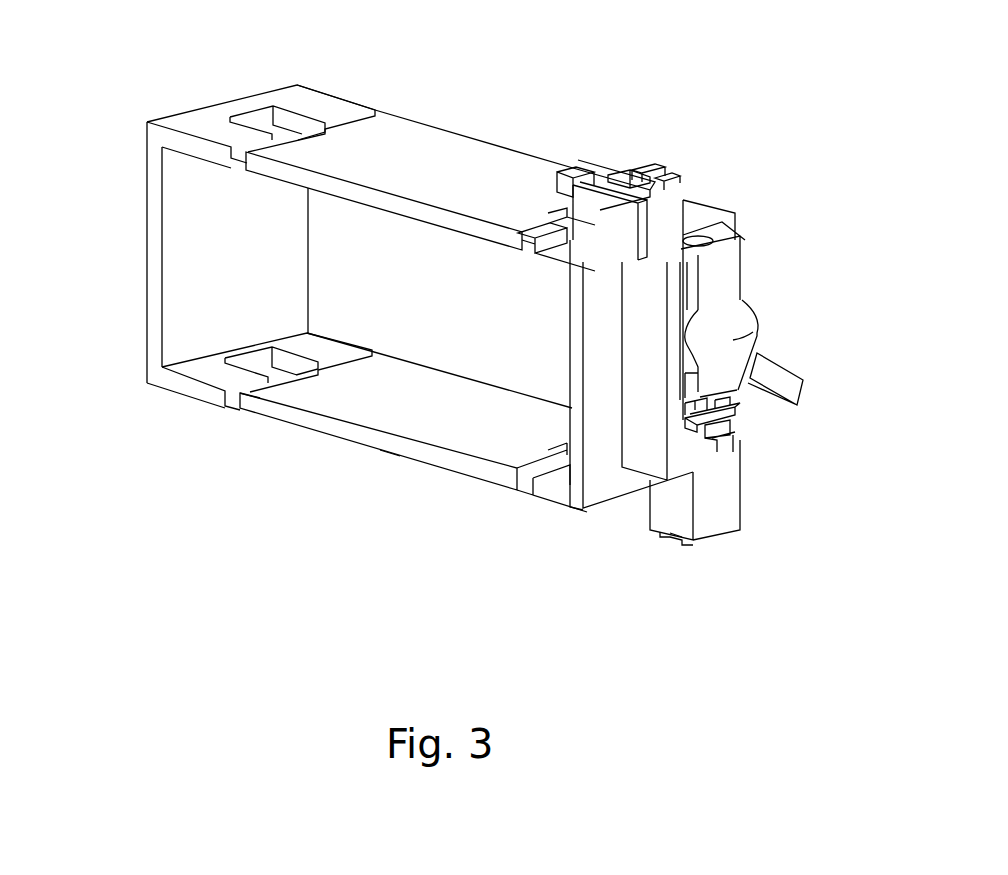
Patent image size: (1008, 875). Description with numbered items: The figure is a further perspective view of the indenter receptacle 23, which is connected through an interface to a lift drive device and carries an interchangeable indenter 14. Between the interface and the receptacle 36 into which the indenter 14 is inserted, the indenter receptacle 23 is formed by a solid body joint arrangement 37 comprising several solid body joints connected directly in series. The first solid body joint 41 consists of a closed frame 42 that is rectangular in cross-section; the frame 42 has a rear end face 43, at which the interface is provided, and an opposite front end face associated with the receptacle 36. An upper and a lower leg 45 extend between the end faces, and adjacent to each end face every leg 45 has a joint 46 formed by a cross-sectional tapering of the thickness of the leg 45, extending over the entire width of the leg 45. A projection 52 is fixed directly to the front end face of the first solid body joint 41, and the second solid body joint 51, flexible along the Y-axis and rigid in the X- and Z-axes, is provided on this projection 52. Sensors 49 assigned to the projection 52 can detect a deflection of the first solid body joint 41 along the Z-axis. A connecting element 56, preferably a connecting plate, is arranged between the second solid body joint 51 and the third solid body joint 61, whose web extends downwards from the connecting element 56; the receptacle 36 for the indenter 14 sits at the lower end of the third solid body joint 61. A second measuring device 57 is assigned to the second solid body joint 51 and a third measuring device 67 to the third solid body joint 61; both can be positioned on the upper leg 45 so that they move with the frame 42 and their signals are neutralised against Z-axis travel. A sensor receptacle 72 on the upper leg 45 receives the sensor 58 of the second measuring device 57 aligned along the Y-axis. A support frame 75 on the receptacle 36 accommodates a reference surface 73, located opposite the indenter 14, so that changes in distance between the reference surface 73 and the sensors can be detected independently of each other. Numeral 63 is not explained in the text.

The indenter 14 is at (689, 545).
The indenter receptacle 23 is at (281, 456).
The receptacle 36 is at (668, 548).
The solid body joint arrangement 37 is at (394, 557).
The first solid body joint 41 is at (436, 86).
The frame 42 is at (738, 193).
The rear end face 43 is at (150, 222).
The leg 45 is at (486, 152).
The joint 46 is at (527, 495).
The sensors 49 is at (790, 382).
The second solid body joint 51 is at (740, 404).
The projection 52 is at (753, 332).
The connecting element 56 is at (740, 420).
The second measuring device 57 is at (607, 152).
The sensor 58 is at (587, 170).
The third solid body joint 61 is at (742, 432).
The slot 63 is at (717, 441).
The third measuring device 67 is at (540, 214).
The sensor receptacle 72 is at (634, 184).
The reference surface 73 is at (650, 175).
The support frame 75 is at (648, 448).